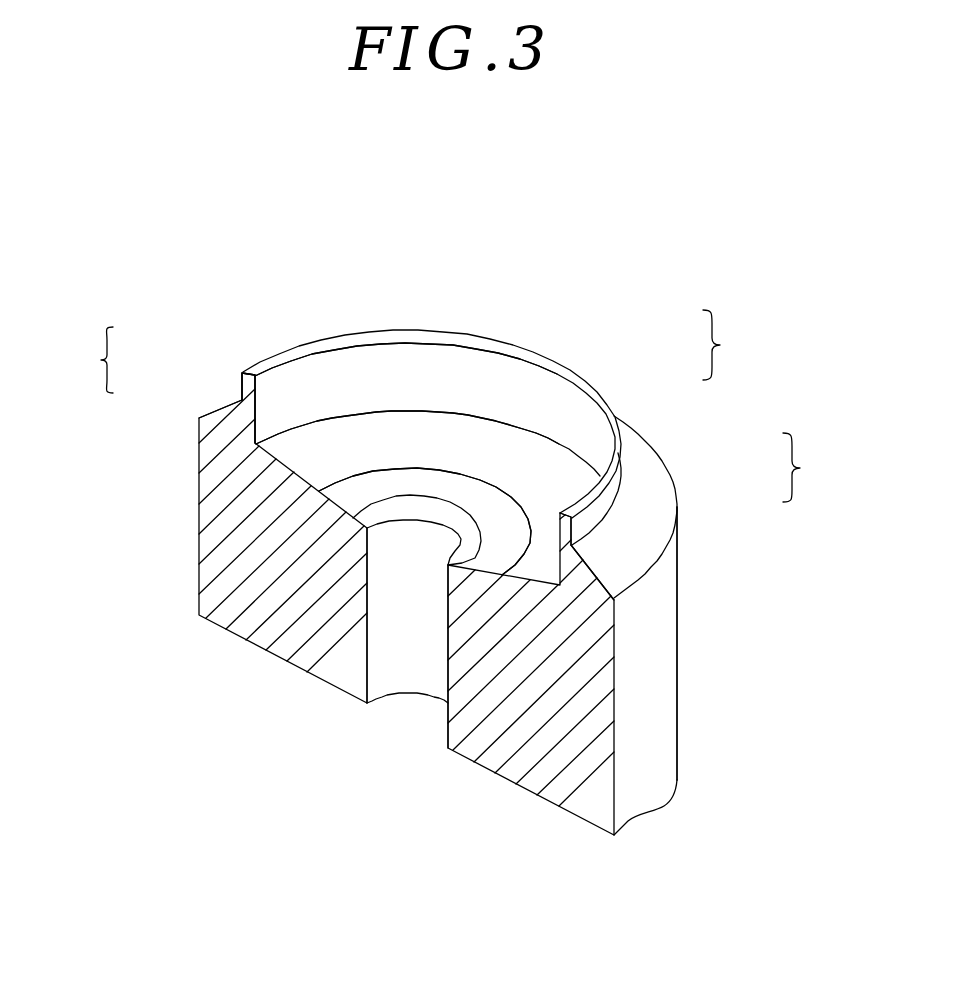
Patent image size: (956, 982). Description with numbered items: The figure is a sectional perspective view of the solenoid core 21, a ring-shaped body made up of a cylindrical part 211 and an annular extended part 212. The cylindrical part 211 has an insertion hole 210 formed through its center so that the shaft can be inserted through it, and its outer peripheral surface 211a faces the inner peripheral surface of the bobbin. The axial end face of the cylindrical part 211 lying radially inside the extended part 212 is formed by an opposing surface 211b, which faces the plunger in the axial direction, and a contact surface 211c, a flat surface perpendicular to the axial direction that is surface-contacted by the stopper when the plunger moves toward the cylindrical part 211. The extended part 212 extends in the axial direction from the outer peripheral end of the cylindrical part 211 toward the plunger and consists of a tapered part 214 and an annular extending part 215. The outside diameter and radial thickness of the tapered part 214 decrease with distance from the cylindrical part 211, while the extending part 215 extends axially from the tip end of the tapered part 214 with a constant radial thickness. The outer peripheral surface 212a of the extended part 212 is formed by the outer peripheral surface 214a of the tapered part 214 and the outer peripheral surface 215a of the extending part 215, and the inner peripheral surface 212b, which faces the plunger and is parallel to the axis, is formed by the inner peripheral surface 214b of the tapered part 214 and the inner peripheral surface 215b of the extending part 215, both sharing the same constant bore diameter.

The solenoid core 21 is at (533, 303).
The insertion hole 210 is at (427, 683).
The cylindrical part 211 is at (267, 570).
The outer peripheral surface 211a is at (657, 673).
The opposing surface 211b is at (403, 435).
The contact surface 211c is at (367, 485).
The extended part 212 is at (149, 385).
The outer peripheral surface 212a is at (826, 467).
The inner peripheral surface 212b is at (747, 345).
The tapered part 214 is at (223, 417).
The outer peripheral surface 214a is at (640, 525).
The inner peripheral surface 214b is at (513, 401).
The extending part 215 is at (243, 378).
The outer peripheral surface 215a is at (620, 490).
The inner peripheral surface 215b is at (517, 370).